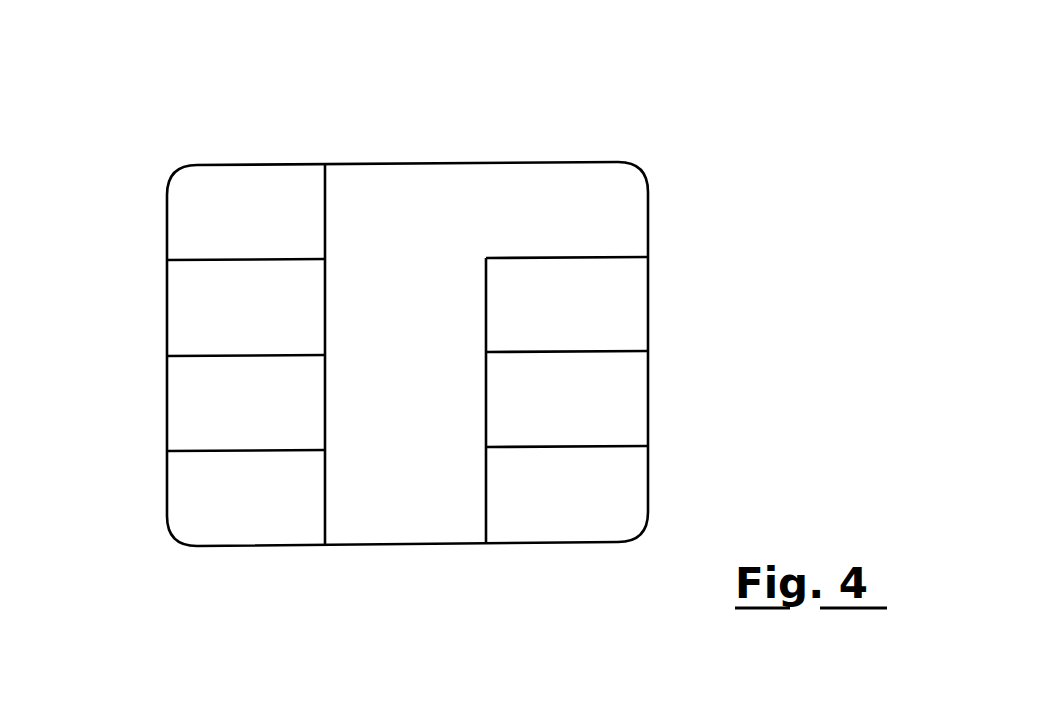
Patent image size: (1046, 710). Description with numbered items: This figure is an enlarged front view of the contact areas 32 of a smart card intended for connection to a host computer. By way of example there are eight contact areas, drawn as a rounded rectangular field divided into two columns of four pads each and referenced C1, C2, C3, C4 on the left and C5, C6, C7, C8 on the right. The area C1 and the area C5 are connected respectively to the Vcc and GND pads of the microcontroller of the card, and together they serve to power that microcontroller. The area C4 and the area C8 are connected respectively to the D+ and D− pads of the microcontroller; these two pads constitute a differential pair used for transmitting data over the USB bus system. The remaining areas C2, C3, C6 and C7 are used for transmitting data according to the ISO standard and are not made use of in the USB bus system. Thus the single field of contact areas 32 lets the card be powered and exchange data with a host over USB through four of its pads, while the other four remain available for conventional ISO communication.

The contact areas 32 is at (624, 131).
The contact area C1 is at (197, 213).
The contact area C2 is at (186, 300).
The contact area C3 is at (178, 428).
The contact area C4 is at (183, 500).
The contact area C5 is at (612, 209).
The contact area C6 is at (618, 294).
The contact area C7 is at (618, 404).
The contact area C8 is at (608, 497).